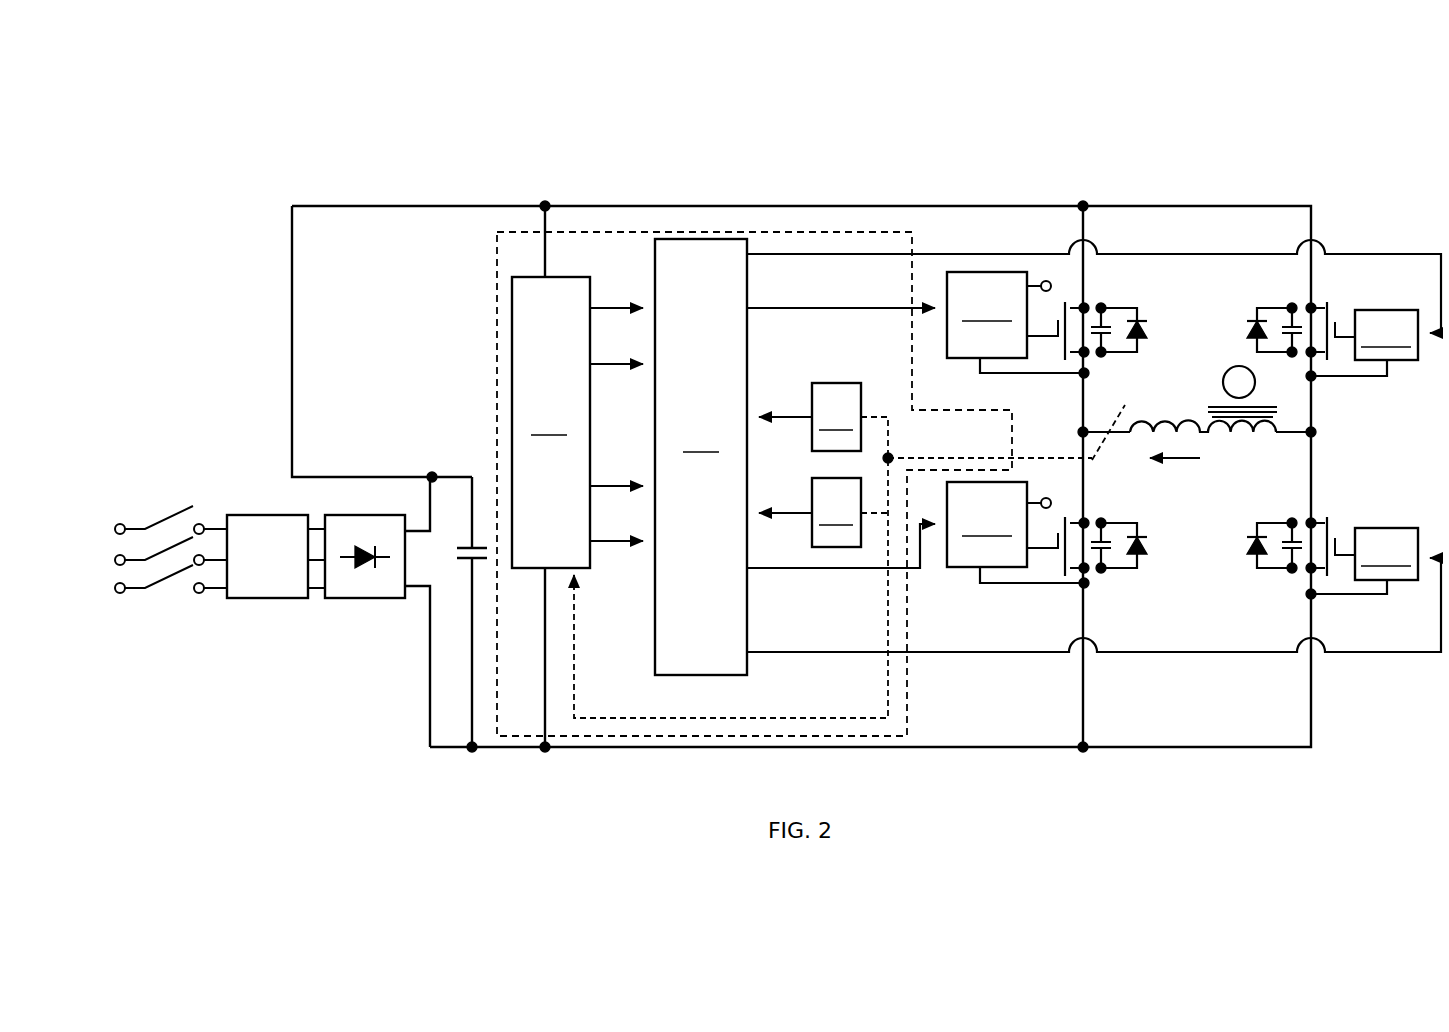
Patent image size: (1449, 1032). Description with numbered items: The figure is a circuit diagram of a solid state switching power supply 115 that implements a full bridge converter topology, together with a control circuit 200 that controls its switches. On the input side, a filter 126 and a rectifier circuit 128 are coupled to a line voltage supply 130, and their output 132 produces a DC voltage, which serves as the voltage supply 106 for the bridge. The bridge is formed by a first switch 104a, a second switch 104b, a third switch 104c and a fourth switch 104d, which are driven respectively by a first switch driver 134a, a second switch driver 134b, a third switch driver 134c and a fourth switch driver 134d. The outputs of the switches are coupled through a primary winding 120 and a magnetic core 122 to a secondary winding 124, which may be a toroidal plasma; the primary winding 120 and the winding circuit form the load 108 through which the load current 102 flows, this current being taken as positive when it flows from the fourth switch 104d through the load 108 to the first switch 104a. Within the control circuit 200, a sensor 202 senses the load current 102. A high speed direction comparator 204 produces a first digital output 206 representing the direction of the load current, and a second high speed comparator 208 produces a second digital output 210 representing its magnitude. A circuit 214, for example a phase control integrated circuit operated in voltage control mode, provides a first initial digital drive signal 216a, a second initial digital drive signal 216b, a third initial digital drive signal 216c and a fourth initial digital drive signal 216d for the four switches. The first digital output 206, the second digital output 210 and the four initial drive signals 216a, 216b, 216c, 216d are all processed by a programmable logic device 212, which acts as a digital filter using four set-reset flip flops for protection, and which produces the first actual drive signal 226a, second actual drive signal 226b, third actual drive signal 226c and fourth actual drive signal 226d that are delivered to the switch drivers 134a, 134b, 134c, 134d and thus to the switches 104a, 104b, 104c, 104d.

The load current 102 is at (1173, 462).
The first switch 104a is at (1146, 578).
The second switch 104b is at (1140, 305).
The third switch 104c is at (1253, 585).
The fourth switch 104d is at (1250, 306).
The voltage supply 106 is at (268, 698).
The load 108 is at (1207, 510).
The switching power supply 115 is at (1063, 165).
The primary winding 120 is at (1214, 441).
The magnetic core 122 is at (1285, 409).
The secondary winding 124 is at (1228, 370).
The filter 126 is at (261, 600).
The rectifier circuit 128 is at (366, 600).
The line voltage supply 130 is at (152, 525).
The output 132 is at (412, 568).
The first switch driver 134a is at (1015, 532).
The second switch driver 134b is at (1015, 322).
The third switch driver 134c is at (1364, 561).
The fourth switch driver 134d is at (1364, 343).
The control circuit 200 is at (497, 257).
The sensor 202 is at (1045, 455).
The high speed direction comparator 204 is at (836, 417).
The first digital output 206 is at (783, 412).
The second high speed comparator 208 is at (836, 512).
The second digital output 210 is at (783, 510).
The programmable logic device 212 is at (701, 457).
The circuit 214 is at (551, 479).
The first initial digital drive signal 216a is at (617, 482).
The second initial digital drive signal 216b is at (617, 369).
The third initial digital drive signal 216c is at (613, 546).
The fourth initial digital drive signal 216d is at (617, 303).
The first actual drive signal 226a is at (782, 572).
The second actual drive signal 226b is at (861, 312).
The third actual drive signal 226c is at (790, 656).
The fourth actual drive signal 226d is at (823, 257).